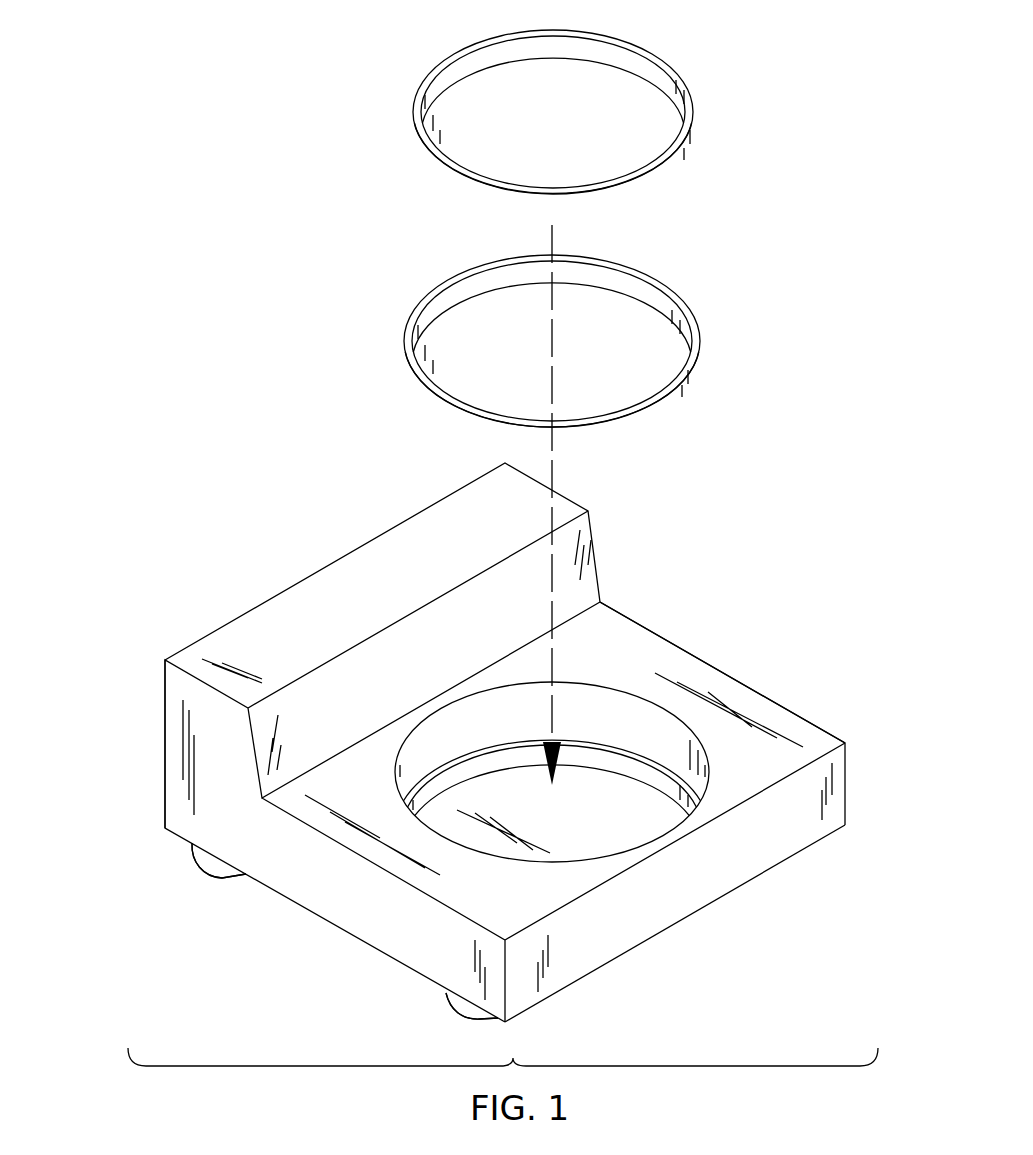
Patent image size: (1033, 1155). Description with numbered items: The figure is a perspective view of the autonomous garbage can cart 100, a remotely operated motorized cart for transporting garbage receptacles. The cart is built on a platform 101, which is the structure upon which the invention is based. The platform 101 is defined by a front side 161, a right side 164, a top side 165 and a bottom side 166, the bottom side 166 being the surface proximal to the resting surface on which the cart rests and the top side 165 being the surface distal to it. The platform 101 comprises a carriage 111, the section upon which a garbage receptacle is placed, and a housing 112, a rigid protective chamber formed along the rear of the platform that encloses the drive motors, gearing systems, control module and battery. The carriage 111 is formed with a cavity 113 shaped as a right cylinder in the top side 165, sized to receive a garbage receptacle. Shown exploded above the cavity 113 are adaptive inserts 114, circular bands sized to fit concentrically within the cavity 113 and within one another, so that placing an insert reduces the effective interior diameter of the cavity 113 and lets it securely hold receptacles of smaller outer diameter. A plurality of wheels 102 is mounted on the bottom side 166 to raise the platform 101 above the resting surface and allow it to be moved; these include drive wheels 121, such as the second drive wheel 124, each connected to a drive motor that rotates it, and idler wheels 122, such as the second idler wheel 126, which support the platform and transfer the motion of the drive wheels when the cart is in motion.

The autonomous garbage can cart 100 is at (258, 106).
The platform 101 is at (262, 577).
The plurality of wheels 102 is at (222, 876).
The carriage 111 is at (752, 712).
The housing 112 is at (188, 706).
The cavity 113 is at (650, 768).
The adaptive inserts 114 is at (690, 150).
The drive wheels 121 is at (197, 862).
The idler wheels 122 is at (447, 992).
The second drive wheel 124 is at (210, 870).
The second idler wheel 126 is at (450, 1004).
The front side 161 is at (677, 900).
The right side 164 is at (183, 775).
The top side 165 is at (648, 663).
The bottom side 166 is at (598, 985).